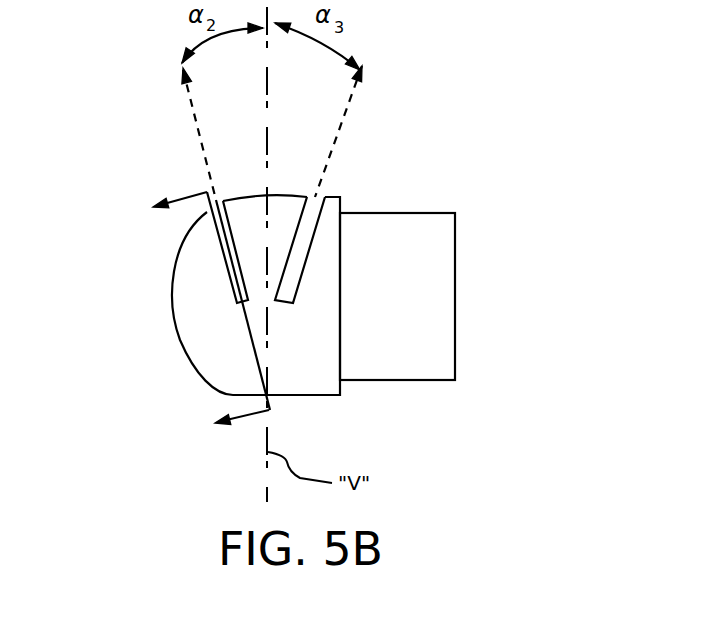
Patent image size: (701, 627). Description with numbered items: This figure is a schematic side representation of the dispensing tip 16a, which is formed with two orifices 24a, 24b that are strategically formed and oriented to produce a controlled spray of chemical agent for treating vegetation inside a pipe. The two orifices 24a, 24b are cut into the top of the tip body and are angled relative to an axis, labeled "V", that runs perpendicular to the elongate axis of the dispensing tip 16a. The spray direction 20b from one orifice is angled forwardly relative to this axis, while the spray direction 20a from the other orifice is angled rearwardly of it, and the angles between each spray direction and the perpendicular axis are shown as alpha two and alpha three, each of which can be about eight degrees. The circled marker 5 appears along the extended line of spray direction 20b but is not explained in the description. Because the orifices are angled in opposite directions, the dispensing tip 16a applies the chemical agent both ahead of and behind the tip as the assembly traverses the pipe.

The dispensing tip 16a is at (320, 342).
The orifice 24a is at (345, 187).
The orifice 24b is at (190, 235).
The spray pattern 20a is at (343, 125).
The spray pattern 20b is at (192, 126).
The circled reference marker for angle offset 5 is at (221, 302).